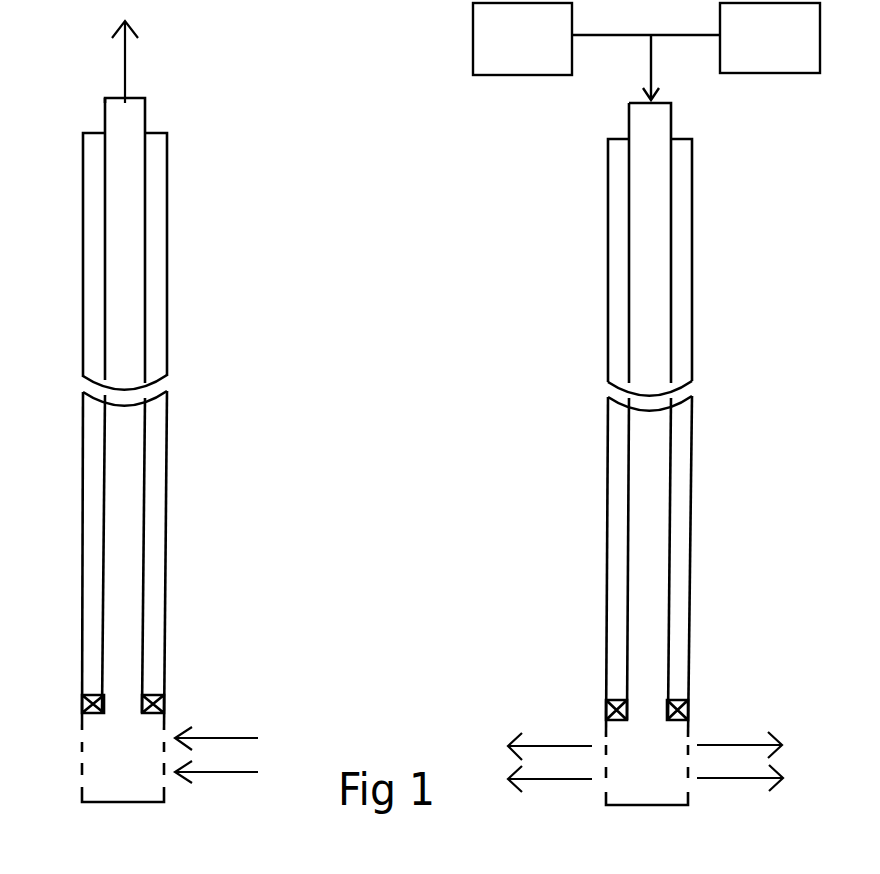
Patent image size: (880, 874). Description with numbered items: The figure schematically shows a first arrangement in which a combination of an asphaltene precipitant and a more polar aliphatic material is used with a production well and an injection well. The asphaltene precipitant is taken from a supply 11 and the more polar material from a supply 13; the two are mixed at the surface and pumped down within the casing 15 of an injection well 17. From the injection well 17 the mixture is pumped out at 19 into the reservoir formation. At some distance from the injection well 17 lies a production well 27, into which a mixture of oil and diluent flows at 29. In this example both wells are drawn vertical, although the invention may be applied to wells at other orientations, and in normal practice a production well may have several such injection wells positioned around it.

The supply of asphaltene precipitant 11 is at (770, 38).
The supply of more polar material 13 is at (522, 39).
The casing 15 is at (668, 543).
The injection well 17 is at (598, 495).
The outflow location into reservoir formation 19 is at (595, 766).
The production well 27 is at (172, 486).
The inflow of oil and diluent 29 is at (172, 756).